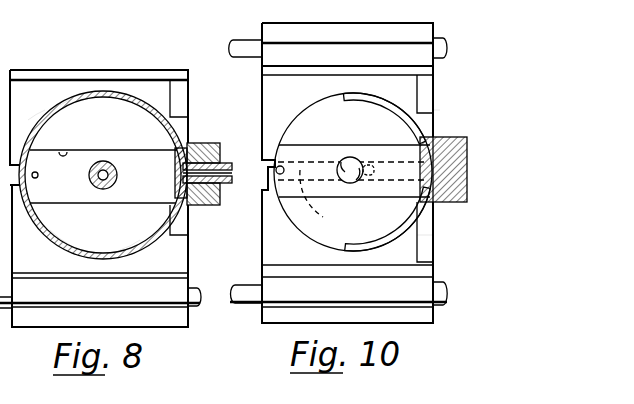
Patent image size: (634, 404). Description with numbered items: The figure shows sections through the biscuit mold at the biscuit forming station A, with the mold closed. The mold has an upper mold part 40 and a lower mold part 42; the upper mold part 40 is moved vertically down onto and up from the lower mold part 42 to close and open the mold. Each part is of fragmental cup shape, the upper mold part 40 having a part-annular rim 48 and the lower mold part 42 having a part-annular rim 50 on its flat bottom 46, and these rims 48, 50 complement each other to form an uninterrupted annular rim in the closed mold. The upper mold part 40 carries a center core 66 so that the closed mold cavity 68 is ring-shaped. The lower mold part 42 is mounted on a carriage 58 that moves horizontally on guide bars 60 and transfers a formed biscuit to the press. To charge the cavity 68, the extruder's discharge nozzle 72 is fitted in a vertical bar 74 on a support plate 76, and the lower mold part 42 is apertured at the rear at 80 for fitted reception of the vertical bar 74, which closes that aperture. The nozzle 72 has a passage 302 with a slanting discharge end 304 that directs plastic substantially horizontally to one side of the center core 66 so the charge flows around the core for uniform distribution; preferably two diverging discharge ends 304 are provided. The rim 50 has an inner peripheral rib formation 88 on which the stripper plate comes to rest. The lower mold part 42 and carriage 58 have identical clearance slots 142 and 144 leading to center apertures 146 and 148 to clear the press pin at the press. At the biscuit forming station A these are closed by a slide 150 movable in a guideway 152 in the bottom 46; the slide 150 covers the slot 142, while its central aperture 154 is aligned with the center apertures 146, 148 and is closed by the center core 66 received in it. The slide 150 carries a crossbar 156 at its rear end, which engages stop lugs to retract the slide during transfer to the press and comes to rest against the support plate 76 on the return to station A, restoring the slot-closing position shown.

In FIG. 8, the upper mold part 40 is at (63, 103).
In FIG. 8, the lower mold part 42 is at (128, 242).
In FIG. 10, the lower mold part 42 is at (245, 257).
In FIG. 8, the flat bottom of lower mold part 46 is at (113, 118).
In FIG. 10, the flat bottom of lower mold part 46 is at (325, 128).
In FIG. 8, the part-annular rim of upper mold part 48 is at (42, 121).
In FIG. 8, the part-annular rim of lower mold part 50 is at (143, 97).
In FIG. 10, the part-annular rim of lower mold part 50 is at (392, 80).
In FIG. 8, the carriage 58 is at (31, 315).
In FIG. 10, the carriage 58 is at (240, 30).
In FIG. 10, the guide bars 60 is at (236, 46).
In FIG. 8, the center core 66 is at (117, 175).
In FIG. 8, the mold cavity 68 is at (68, 222).
In FIG. 8, the discharge nozzle 72 is at (226, 172).
In FIG. 8, the vertical bar 74 is at (191, 148).
In FIG. 10, the vertical bar 74 is at (437, 137).
In FIG. 8, the support plate 76 is at (211, 163).
In FIG. 10, the support plate 76 is at (447, 203).
In FIG. 8, the rear aperture of lower mold part 80 is at (200, 206).
In FIG. 10, the rear aperture of lower mold part 80 is at (427, 237).
In FIG. 10, the inner peripheral rib formation 88 is at (357, 158).
In FIG. 10, the clearance slot of lower mold part 142 is at (323, 218).
In FIG. 10, the clearance slot of carriage 144 is at (285, 26).
In FIG. 10, the center aperture of lower mold part 146 is at (386, 178).
In FIG. 10, the center aperture of carriage 148 is at (346, 24).
In FIG. 8, the slide 150 is at (72, 192).
In FIG. 10, the slide 150 is at (370, 196).
In FIG. 8, the guideway 152 is at (72, 152).
In FIG. 10, the guideway 152 is at (335, 145).
In FIG. 8, the central aperture of slide 154 is at (107, 163).
In FIG. 10, the central aperture of slide 154 is at (362, 160).
In FIG. 8, the crossbar 156 is at (182, 100).
In FIG. 10, the crossbar 156 is at (426, 250).
In FIG. 10, the passage 302 is at (244, 206).
In FIG. 8, the slanting discharge end 304 is at (180, 182).
In FIG. 8, the biscuit forming station A is at (100, 56).
In FIG. 10, the biscuit forming station A is at (260, 213).